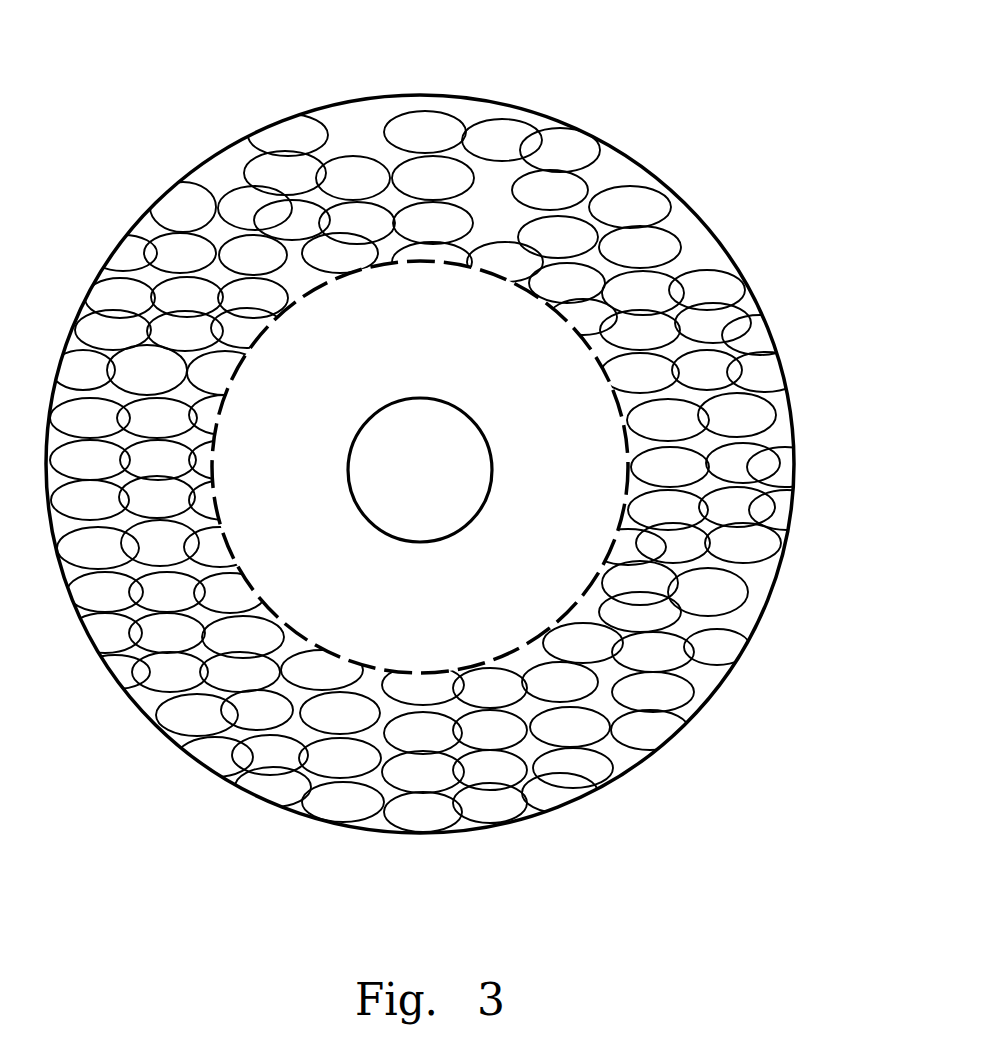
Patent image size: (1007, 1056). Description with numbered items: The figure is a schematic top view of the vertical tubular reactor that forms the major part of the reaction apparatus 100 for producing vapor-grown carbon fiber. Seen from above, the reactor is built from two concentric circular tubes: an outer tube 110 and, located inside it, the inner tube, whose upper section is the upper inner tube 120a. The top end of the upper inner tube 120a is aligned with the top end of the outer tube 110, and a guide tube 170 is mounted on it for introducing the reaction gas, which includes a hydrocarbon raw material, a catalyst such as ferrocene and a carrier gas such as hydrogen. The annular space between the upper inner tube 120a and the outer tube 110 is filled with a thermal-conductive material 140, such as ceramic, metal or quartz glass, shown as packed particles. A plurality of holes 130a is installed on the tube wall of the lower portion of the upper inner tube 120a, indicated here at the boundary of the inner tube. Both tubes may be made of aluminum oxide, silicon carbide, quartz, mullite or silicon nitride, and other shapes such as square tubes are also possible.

The reaction apparatus 100 is at (132, 84).
The outer tube 110 is at (687, 211).
The upper inner tube 120a is at (420, 467).
The holes 130a is at (327, 297).
The thermal-conductive material 140 is at (705, 370).
The guide tube 170 is at (437, 398).